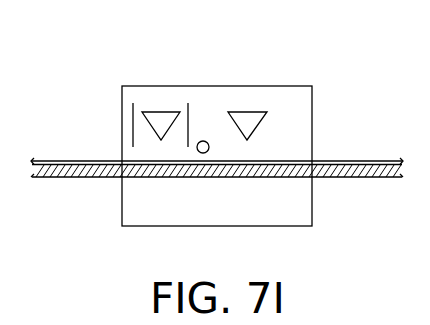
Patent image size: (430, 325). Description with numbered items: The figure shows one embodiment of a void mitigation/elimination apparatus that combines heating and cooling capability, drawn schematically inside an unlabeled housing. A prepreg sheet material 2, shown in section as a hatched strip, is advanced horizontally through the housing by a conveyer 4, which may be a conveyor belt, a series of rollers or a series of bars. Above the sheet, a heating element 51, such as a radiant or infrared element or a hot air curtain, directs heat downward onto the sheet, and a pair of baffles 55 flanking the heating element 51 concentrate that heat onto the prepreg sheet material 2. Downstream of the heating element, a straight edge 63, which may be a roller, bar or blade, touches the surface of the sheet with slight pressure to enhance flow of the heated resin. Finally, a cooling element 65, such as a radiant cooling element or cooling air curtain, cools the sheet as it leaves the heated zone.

The prepreg sheet material 2 is at (361, 161).
The conveyer 4 is at (367, 178).
The heating element 51 is at (162, 118).
The baffle 55 is at (133, 110).
The straight edge 63 is at (203, 153).
The cooling element 65 is at (247, 117).